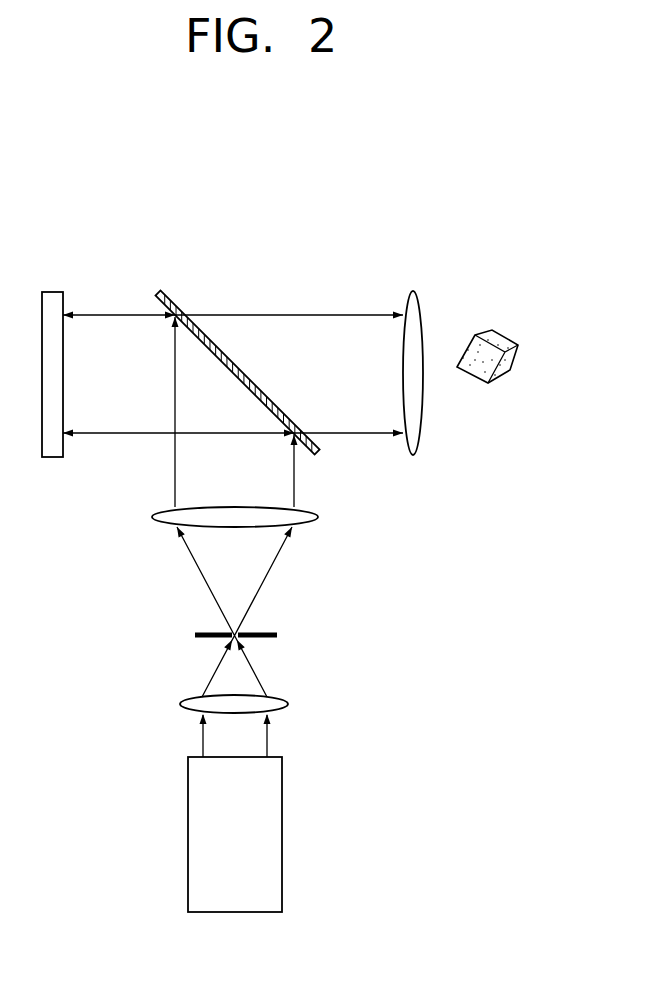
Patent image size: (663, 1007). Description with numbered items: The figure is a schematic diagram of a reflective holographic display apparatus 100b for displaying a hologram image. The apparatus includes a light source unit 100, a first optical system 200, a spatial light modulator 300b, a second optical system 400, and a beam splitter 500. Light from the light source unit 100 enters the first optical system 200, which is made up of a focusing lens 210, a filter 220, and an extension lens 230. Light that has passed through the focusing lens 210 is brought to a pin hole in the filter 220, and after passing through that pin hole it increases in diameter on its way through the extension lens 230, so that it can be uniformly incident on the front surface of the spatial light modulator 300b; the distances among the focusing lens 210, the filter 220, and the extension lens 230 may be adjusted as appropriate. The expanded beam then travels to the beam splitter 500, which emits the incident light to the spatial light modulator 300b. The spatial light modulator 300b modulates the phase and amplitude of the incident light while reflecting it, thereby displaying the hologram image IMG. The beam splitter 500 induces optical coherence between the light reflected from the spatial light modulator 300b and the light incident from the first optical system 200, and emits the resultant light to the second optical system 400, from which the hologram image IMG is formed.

The reflective holographic display apparatus 100b is at (497, 181).
The light source unit 100 is at (282, 832).
The first optical system 200 is at (409, 505).
The focusing lens 210 is at (288, 704).
The filter 220 is at (277, 635).
The extension lens 230 is at (318, 517).
The spatial light modulator 300b is at (53, 291).
The second optical system 400 is at (413, 291).
The beam splitter 500 is at (163, 292).
The hologram image IMG is at (505, 334).